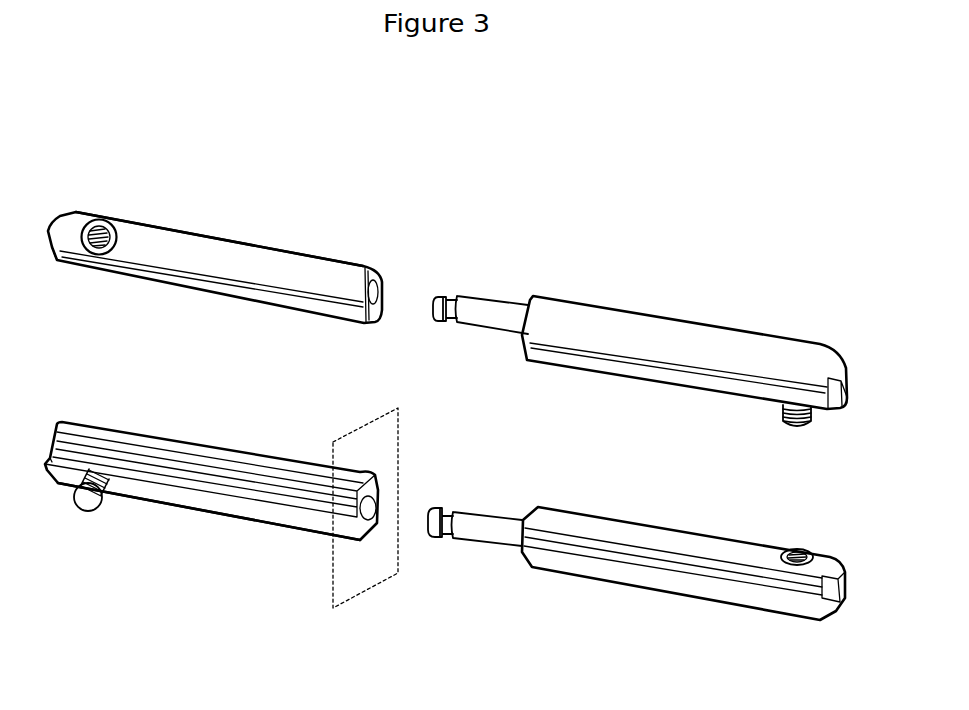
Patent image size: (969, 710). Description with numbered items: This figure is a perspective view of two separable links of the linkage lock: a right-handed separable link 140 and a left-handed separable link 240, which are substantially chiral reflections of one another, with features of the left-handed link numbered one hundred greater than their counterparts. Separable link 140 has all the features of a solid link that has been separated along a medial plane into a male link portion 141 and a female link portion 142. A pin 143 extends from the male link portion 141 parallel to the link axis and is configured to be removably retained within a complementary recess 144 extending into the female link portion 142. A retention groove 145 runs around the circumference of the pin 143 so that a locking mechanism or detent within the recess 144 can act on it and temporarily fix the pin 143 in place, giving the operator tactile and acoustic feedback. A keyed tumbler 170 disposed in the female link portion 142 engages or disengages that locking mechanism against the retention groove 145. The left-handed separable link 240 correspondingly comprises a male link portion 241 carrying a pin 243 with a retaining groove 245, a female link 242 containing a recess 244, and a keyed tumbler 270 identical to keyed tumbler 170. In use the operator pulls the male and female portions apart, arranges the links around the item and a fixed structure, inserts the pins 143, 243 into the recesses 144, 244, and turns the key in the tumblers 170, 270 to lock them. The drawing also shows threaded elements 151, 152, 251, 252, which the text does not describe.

The right-handed separable link 140 is at (244, 233).
The male link portion 141 is at (592, 330).
The female link portion 142 is at (313, 272).
The pin 143 is at (485, 310).
The recess 144 is at (377, 273).
The retention groove 145 is at (447, 321).
The threaded hole 151 is at (94, 221).
The threaded stud 152 is at (783, 420).
The keyed tumbler 170 is at (222, 238).
The left-handed separable link 240 is at (238, 538).
The male link portion 241 is at (630, 573).
The female link 242 is at (262, 497).
The pin 243 is at (497, 527).
The recess 244 is at (368, 516).
The retaining groove 245 is at (450, 522).
The threaded hole 251 is at (801, 554).
The threaded stud 252 is at (84, 503).
The keyed tumbler 270 is at (270, 528).